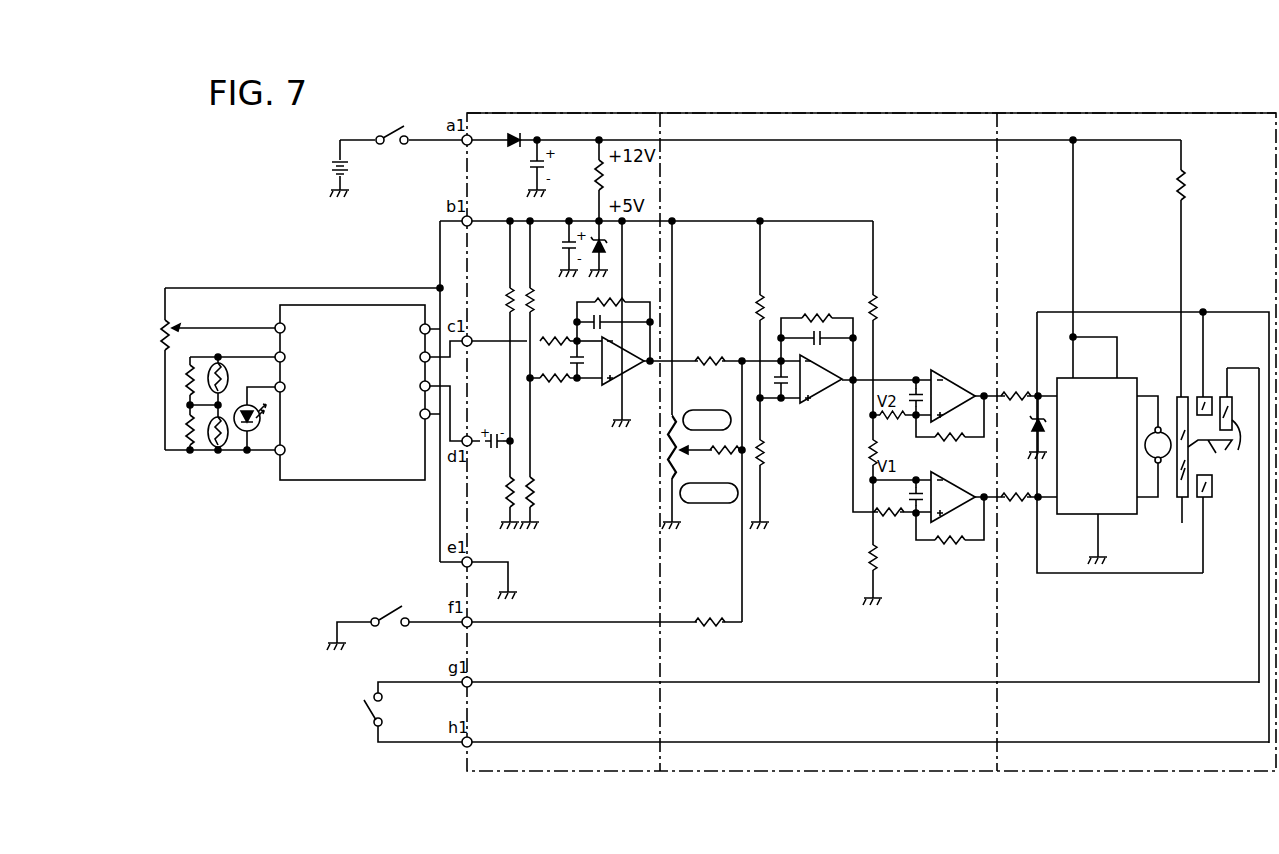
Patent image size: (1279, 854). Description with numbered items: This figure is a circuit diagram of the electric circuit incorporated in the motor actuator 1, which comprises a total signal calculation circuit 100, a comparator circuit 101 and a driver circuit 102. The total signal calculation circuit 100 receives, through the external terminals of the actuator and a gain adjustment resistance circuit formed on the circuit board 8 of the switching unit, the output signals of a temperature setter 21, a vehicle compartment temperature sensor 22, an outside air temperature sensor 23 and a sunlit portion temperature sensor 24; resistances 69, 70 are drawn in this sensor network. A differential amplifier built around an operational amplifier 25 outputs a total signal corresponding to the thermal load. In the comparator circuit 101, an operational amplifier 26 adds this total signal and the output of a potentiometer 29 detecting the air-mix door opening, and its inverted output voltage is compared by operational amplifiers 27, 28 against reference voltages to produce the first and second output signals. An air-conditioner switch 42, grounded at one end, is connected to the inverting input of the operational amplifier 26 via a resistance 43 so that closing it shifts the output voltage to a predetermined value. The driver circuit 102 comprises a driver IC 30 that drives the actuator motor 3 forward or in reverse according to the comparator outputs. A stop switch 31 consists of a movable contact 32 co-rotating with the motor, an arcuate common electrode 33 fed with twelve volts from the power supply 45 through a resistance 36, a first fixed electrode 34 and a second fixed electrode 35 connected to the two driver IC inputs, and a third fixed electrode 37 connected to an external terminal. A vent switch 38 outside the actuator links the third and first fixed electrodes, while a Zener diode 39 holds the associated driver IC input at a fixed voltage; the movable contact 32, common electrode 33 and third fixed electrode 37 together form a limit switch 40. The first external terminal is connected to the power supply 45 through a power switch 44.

The motor actuator 1 is at (858, 771).
The total signal calculation circuit 100 is at (578, 113).
The comparator circuit 101 is at (774, 113).
The driver circuit 102 is at (1165, 113).
The actuator motor 3 is at (1163, 463).
The circuit board 8 is at (358, 480).
The temperature setter 21 is at (160, 338).
The vehicle compartment temperature sensor 22 is at (232, 372).
The outside air temperature sensor 23 is at (215, 447).
The sunlit portion temperature sensor 24 is at (258, 438).
The operational amplifier 25 is at (633, 370).
The operational amplifier 26 is at (826, 395).
The operational amplifier 27 is at (945, 370).
The operational amplifier 28 is at (943, 472).
The potentiometer 29 is at (678, 466).
The driver IC 30 is at (1092, 515).
The stop switch 31 is at (1174, 385).
The movable contact 32 is at (1214, 453).
The common electrode 33 is at (1178, 526).
The first fixed electrode 34 is at (1206, 397).
The second fixed electrode 35 is at (1208, 497).
The resistance 36 is at (1186, 190).
The third fixed electrode 37 is at (1229, 397).
The vent switch 38 is at (383, 717).
The Zener diode 39 is at (1033, 420).
The limit switch 40 is at (1238, 450).
The air-conditioner switch 42 is at (392, 626).
The resistance 43 is at (708, 628).
The power switch 44 is at (390, 145).
The power supply 45 is at (345, 170).
The resistor 69 is at (184, 380).
The resistor 70 is at (184, 428).